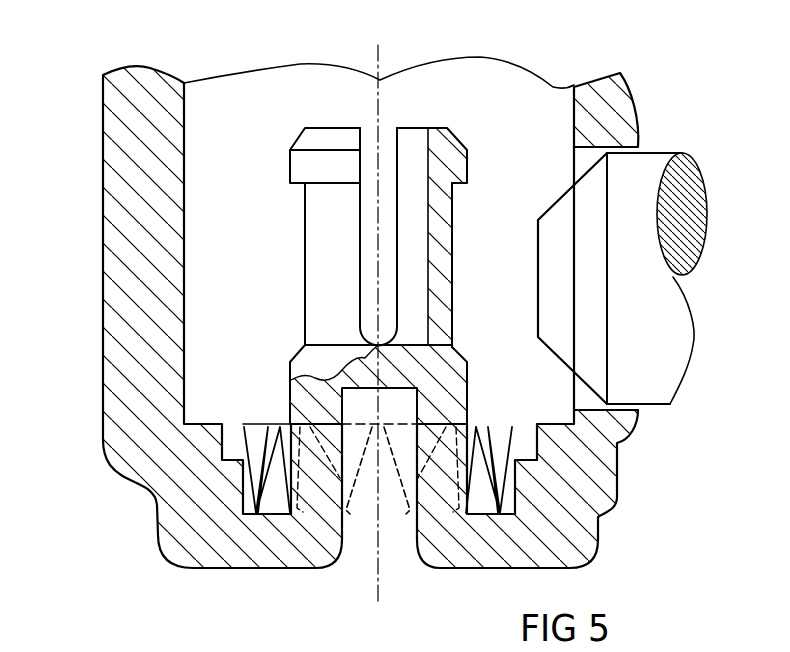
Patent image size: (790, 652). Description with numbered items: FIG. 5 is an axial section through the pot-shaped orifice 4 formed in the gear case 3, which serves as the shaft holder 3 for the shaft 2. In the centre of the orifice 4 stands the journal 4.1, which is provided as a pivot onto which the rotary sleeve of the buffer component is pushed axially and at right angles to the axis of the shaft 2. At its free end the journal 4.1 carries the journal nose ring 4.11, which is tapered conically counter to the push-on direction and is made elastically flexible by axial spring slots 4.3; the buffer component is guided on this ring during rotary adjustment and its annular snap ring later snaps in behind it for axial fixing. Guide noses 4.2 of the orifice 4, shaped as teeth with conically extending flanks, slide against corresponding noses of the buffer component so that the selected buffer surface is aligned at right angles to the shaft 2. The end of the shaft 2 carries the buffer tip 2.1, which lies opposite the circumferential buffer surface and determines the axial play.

The shaft 2 is at (605, 331).
The buffer tip 2.1 is at (537, 225).
The gear case 3 is at (140, 302).
The orifice 4 is at (286, 300).
The journal 4.1 is at (342, 256).
The journal nose ring 4.11 is at (330, 167).
The guide nose 4.2 is at (268, 470).
The axial spring slot 4.3 is at (385, 183).